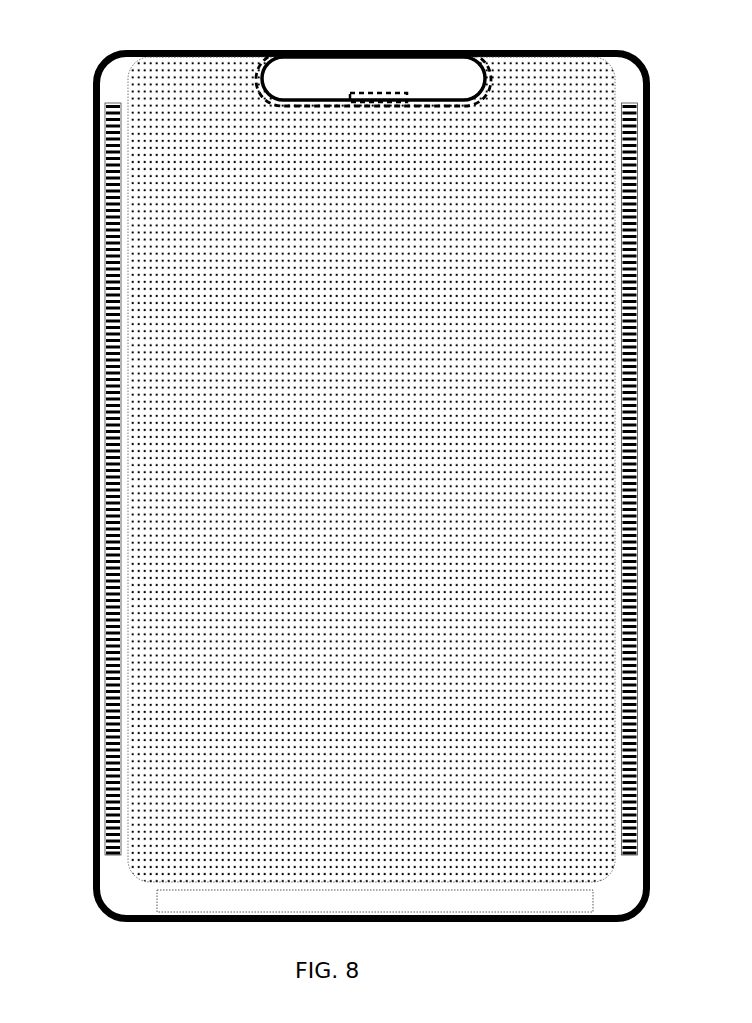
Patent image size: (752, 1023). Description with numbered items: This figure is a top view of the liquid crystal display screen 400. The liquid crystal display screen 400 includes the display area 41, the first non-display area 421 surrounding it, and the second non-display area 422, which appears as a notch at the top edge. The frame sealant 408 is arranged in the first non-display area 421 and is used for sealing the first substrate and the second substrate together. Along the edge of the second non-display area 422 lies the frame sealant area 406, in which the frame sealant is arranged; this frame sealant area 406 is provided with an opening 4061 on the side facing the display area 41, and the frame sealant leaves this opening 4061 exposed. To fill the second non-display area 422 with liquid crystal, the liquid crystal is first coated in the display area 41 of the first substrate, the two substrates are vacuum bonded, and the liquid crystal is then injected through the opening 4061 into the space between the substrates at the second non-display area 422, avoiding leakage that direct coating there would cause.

The liquid crystal display screen 400 is at (604, 20).
The first non-display area 421 is at (342, 486).
The display area 41 is at (332, 484).
The frame sealant 408 is at (328, 479).
The frame sealant area 406 is at (340, 64).
The second non-display area 422 is at (373, 57).
The opening 4061 is at (347, 117).